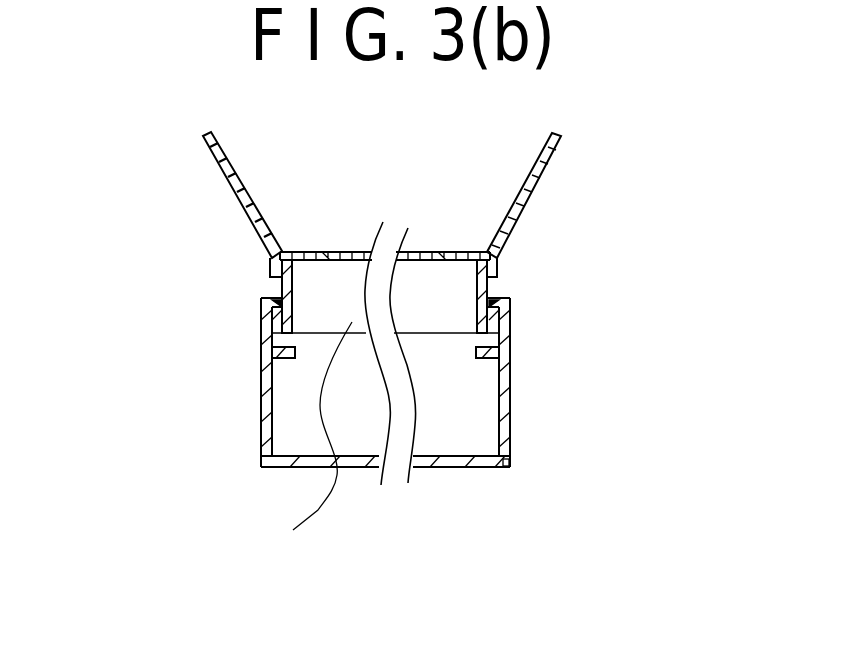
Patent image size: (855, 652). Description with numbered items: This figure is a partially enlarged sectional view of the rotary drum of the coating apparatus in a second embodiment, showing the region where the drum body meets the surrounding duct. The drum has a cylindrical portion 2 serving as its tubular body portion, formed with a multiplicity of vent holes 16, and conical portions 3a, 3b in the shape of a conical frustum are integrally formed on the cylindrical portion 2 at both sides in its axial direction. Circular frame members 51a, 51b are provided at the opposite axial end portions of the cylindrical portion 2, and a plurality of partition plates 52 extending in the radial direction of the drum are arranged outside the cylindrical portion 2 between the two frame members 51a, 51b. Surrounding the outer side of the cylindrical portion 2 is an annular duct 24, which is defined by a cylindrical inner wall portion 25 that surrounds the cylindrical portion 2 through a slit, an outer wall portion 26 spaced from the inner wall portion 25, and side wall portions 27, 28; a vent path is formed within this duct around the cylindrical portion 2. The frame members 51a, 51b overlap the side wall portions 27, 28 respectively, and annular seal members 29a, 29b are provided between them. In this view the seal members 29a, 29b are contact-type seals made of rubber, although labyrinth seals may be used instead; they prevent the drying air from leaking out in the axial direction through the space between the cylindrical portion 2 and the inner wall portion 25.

The cylindrical portion 2 is at (342, 250).
The vent holes 16 is at (460, 250).
The conical portion 3a is at (545, 174).
The conical portion 3b is at (240, 201).
The circular frame member 51a is at (487, 283).
The circular frame member 51b is at (282, 290).
The annular seal member 29a is at (508, 300).
The annular seal member 29b is at (262, 316).
The annular duct 24 is at (518, 410).
The cylindrical inner wall portion 25 is at (510, 370).
The side wall portion 28 is at (262, 415).
The side wall portion 27 is at (513, 458).
The outer wall portion 26 is at (465, 468).
The partition plates 52 is at (310, 452).